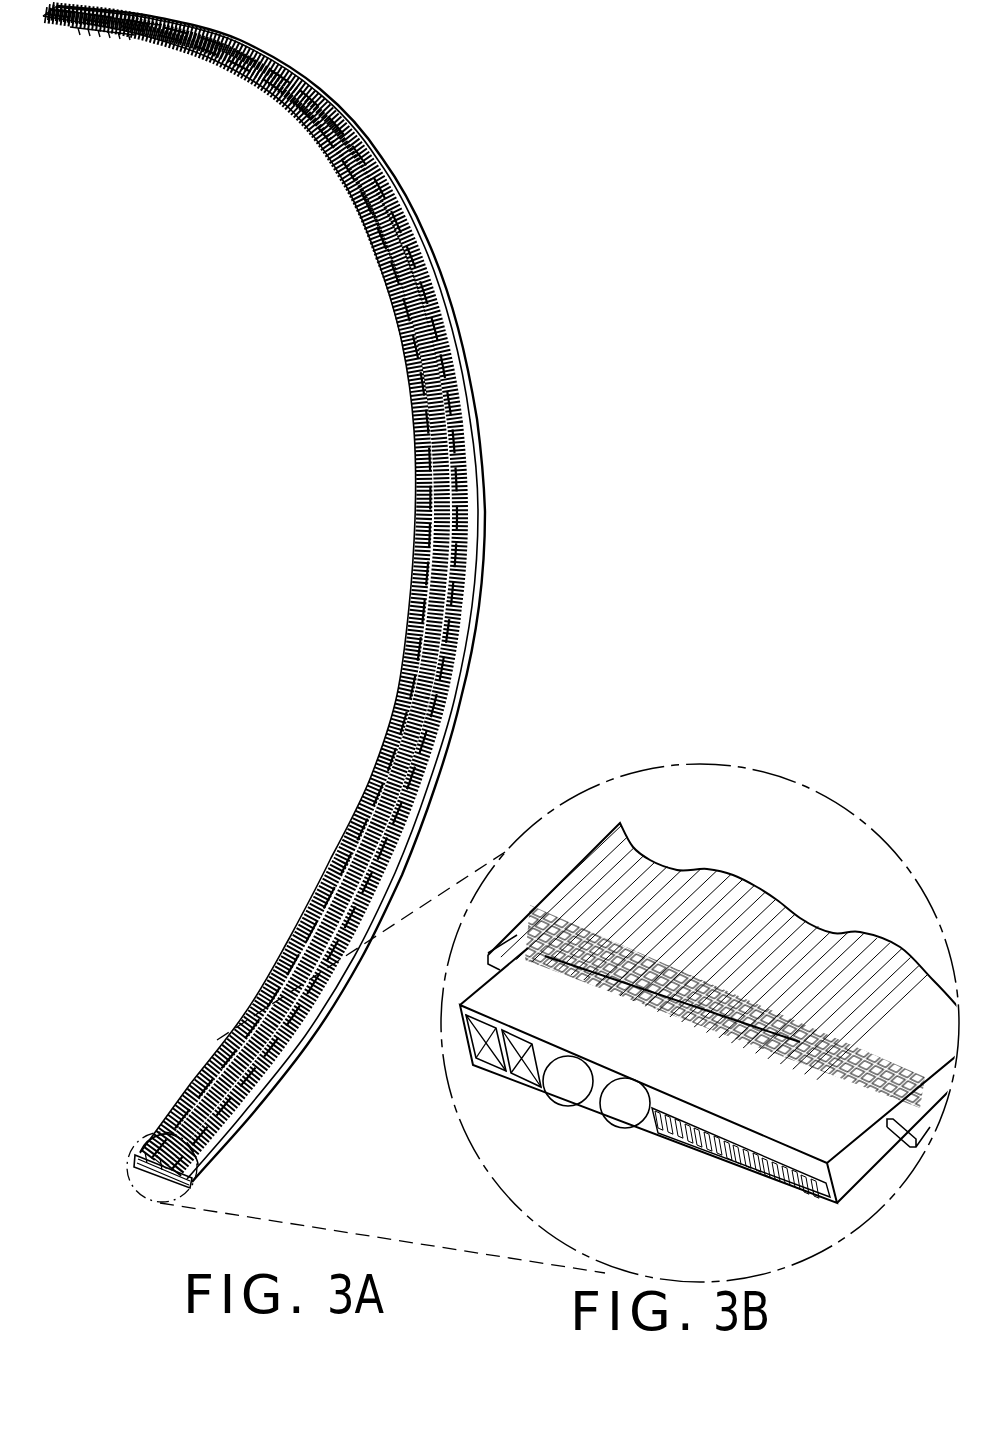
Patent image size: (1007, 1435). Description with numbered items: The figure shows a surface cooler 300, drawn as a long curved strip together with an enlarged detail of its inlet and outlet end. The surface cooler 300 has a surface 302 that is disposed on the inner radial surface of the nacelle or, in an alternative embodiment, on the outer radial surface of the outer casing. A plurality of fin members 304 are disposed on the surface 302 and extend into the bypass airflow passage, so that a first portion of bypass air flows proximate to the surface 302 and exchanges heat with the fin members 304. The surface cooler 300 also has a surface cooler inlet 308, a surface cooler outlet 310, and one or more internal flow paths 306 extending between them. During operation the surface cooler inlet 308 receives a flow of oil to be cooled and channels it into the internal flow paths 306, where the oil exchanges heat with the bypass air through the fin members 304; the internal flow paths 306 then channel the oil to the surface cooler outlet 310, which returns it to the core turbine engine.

In FIG. 3A, the surface cooler 300 is at (338, 639).
In FIG. 3A, the surface 302 is at (408, 624).
In FIG. 3A, the fin members 304 is at (412, 742).
In FIG. 3A, the internal flow paths 306 is at (350, 872).
In FIG. 3B, the surface cooler inlet 308 is at (485, 1038).
In FIG. 3B, the surface cooler outlet 310 is at (573, 1085).